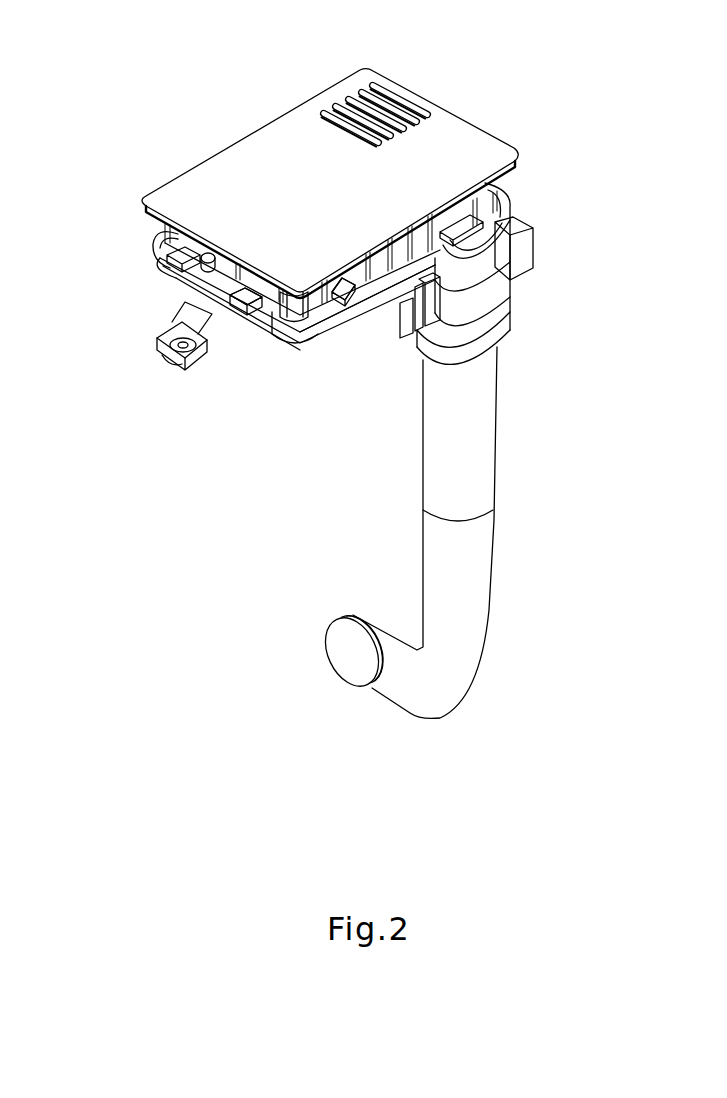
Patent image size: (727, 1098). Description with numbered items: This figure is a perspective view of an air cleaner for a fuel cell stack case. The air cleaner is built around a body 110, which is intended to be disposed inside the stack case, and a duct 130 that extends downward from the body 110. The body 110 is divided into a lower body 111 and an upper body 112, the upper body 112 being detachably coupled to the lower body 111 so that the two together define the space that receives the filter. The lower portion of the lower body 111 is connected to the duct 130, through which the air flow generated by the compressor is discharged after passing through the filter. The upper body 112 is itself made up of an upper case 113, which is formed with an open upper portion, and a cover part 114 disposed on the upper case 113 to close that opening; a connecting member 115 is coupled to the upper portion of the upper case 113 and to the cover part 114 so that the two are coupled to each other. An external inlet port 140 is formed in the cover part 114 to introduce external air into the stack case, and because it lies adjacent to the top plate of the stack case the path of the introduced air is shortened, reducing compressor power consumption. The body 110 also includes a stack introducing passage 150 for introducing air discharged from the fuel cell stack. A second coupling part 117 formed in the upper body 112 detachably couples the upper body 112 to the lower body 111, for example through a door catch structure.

The body 110 is at (540, 190).
The lower body 111 is at (370, 310).
The upper body 112 is at (323, 462).
The upper case 113 is at (306, 312).
The cover part 114 is at (325, 312).
The connecting member 115 is at (275, 312).
The second coupling part 117 is at (256, 306).
The duct 130 is at (492, 398).
The external inlet port 140 is at (393, 100).
The stack introducing passage 150 is at (164, 290).